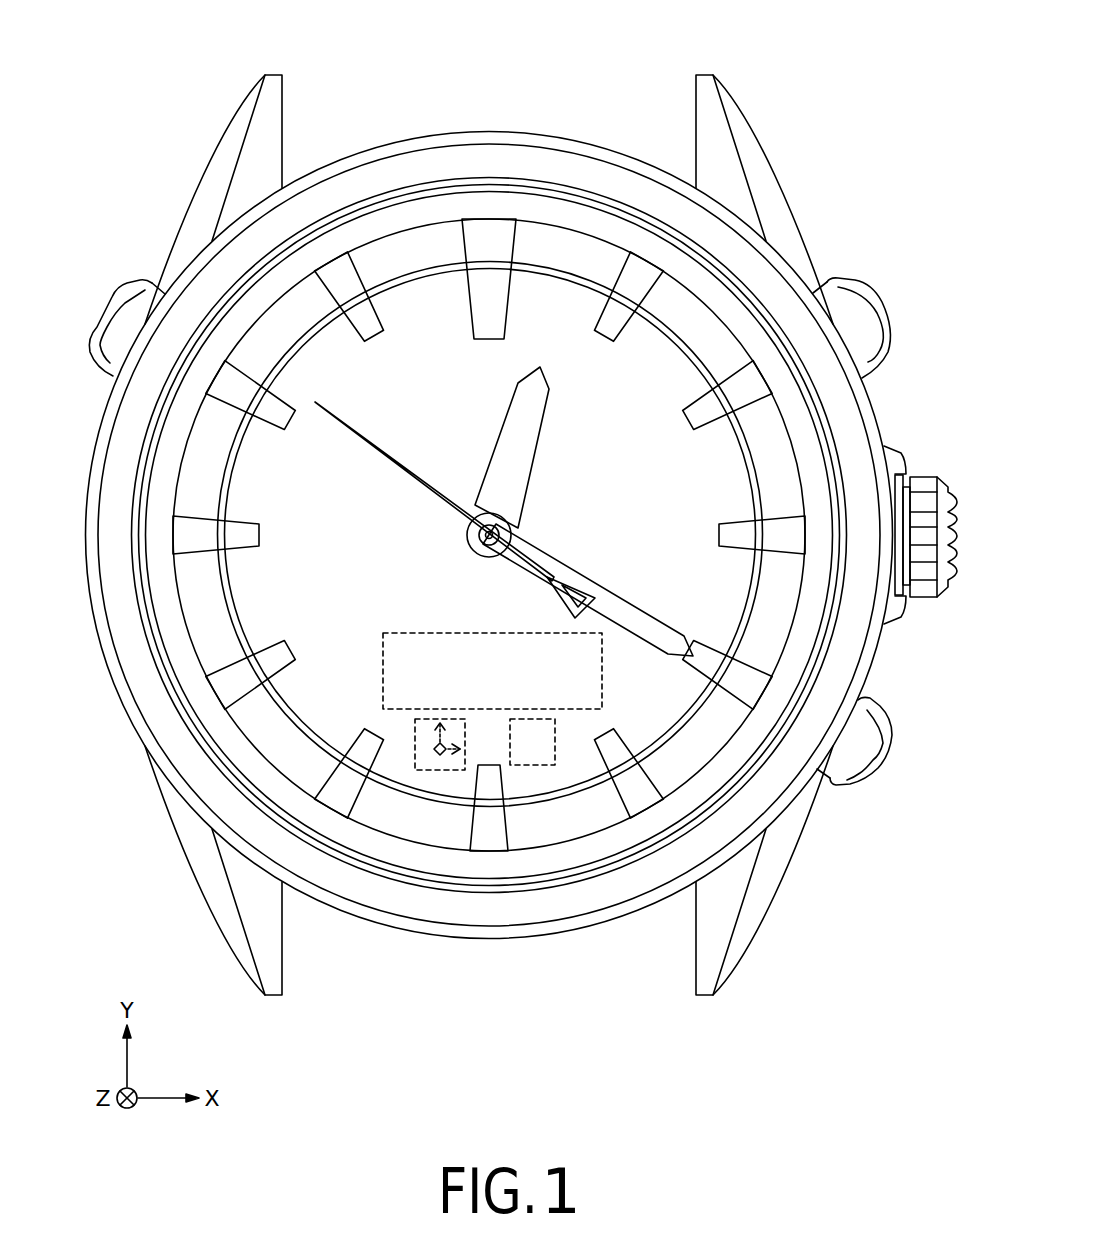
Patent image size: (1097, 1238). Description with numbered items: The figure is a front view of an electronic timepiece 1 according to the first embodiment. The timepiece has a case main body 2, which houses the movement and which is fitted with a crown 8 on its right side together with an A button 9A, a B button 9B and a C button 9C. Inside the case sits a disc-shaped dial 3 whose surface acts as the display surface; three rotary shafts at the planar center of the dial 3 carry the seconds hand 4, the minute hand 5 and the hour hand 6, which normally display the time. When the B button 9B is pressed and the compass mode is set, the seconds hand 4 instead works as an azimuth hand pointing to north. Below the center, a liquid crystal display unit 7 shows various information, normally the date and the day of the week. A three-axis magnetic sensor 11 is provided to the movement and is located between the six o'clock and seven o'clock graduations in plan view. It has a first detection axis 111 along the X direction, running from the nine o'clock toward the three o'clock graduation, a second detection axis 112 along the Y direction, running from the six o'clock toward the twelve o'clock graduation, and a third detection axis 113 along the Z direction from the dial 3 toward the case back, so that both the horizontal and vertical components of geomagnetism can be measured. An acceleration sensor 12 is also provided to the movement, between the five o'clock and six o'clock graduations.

The electronic timepiece 1 is at (848, 90).
The case main body 2 is at (581, 114).
The dial 3 is at (260, 593).
The seconds hand 4 is at (396, 460).
The minute hand 5 is at (620, 594).
The hour hand 6 is at (536, 440).
The liquid crystal display unit 7 is at (604, 674).
The crown 8 is at (930, 472).
The A button 9A is at (878, 302).
The B button 9B is at (883, 757).
The C button 9C is at (100, 302).
The three-axis magnetic sensor 11 is at (427, 771).
The first detection axis 111 is at (450, 772).
The second detection axis 112 is at (414, 736).
The third detection axis 113 is at (416, 771).
The acceleration sensor 12 is at (532, 766).